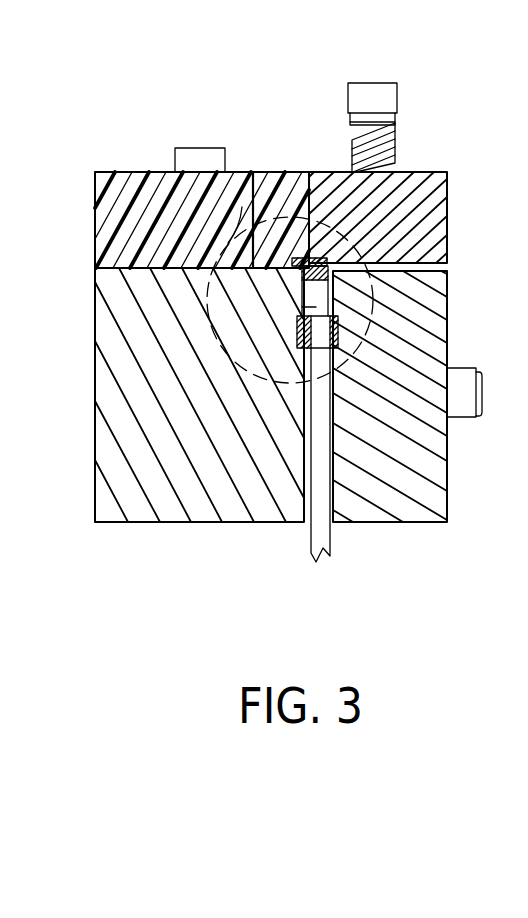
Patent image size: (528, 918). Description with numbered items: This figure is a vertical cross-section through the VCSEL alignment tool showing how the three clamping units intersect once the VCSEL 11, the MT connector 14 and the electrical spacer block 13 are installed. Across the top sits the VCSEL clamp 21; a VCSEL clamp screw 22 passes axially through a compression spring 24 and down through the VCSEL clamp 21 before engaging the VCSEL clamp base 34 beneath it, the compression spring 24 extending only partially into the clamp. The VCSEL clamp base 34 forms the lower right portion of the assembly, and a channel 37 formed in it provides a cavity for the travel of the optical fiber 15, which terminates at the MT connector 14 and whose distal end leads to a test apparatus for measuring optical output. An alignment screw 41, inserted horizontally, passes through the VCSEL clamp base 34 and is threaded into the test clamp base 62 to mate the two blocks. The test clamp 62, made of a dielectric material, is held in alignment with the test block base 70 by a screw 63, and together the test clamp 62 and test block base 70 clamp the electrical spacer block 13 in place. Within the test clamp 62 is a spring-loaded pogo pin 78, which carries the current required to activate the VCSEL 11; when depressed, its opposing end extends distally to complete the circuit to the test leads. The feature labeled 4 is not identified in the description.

The passage 4 is at (278, 207).
The VCSEL 11 is at (326, 260).
The electrical spacer block 13 is at (248, 270).
The MT connector 14 is at (317, 307).
The optical fiber 15 is at (311, 537).
The VCSEL clamp 21 is at (448, 218).
The VCSEL clamp screw 22 is at (398, 95).
The compression spring 24 is at (398, 135).
The VCSEL clamp base 34 is at (448, 343).
The channel 37 is at (321, 505).
The alignment screw 41 is at (476, 367).
The test clamp 62 is at (95, 220).
The screw 63 is at (223, 148).
The test block base 70 is at (96, 428).
The pogo pin 78 is at (247, 268).